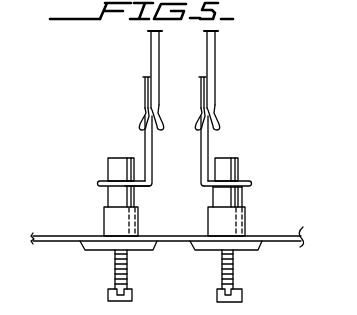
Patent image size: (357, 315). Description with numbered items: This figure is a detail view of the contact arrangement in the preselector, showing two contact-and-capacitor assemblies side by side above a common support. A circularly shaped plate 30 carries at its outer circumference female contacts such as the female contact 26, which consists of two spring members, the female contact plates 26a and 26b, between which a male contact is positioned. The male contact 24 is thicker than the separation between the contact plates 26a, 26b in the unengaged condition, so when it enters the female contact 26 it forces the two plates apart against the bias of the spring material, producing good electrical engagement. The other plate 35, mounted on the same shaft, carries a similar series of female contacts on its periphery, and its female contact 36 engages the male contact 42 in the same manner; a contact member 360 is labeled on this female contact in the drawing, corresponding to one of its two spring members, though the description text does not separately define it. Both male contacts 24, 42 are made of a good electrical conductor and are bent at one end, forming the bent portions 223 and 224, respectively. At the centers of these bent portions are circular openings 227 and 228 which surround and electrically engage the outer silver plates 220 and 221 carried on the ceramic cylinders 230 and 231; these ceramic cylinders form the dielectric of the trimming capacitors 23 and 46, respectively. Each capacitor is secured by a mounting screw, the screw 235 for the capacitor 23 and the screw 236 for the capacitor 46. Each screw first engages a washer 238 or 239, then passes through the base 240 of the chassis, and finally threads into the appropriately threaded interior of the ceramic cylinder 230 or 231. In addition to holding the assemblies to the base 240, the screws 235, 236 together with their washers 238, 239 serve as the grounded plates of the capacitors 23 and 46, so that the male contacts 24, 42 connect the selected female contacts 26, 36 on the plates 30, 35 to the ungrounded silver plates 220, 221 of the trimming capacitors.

The trimming capacitor 23 is at (247, 210).
The male contact 24 is at (209, 138).
The female contact 26 is at (219, 108).
The female contact plate 26a is at (140, 124).
The female contact plate 26b is at (199, 117).
The plate 30 is at (218, 49).
The plate 35 is at (151, 48).
The female contact 36 is at (133, 94).
The male contact 42 is at (153, 150).
The trimming capacitor 46 is at (101, 221).
The silver plate 220 is at (243, 199).
The silver plate 221 is at (141, 197).
The bent portion 223 is at (252, 182).
The bent portion 224 is at (101, 181).
The circular opening 227 is at (226, 187).
The circular opening 228 is at (114, 187).
The ceramic cylinder 230 is at (238, 166).
The ceramic cylinder 231 is at (123, 158).
The mounting screw 235 is at (235, 285).
The mounting screw 236 is at (116, 278).
The washer 238 is at (250, 249).
The washer 239 is at (85, 249).
The base 240 is at (290, 240).
The clip prong 360 is at (140, 117).